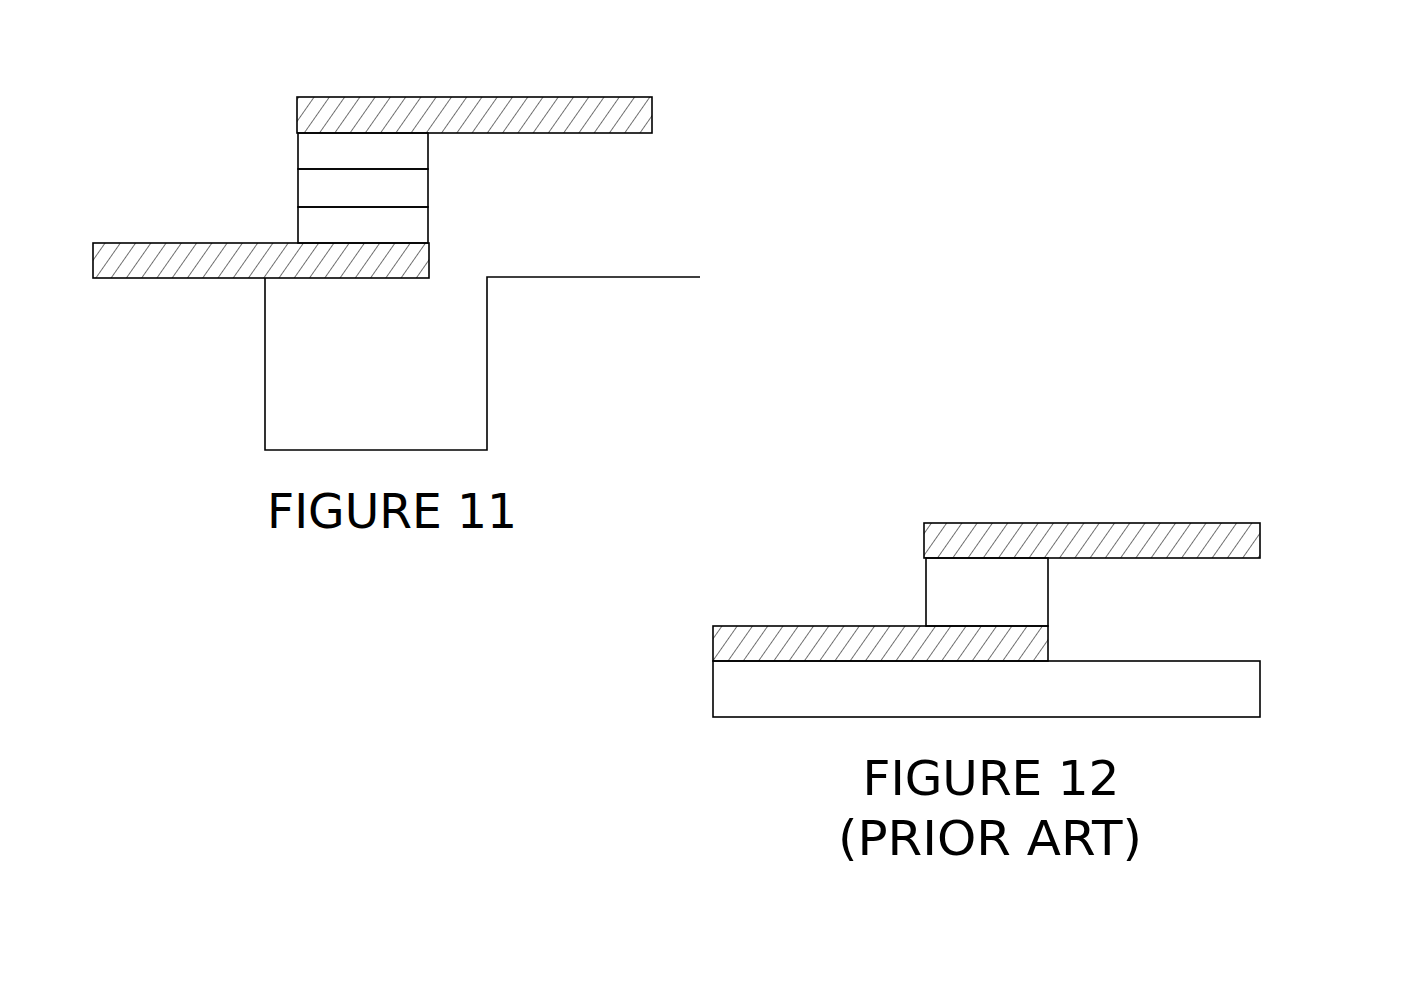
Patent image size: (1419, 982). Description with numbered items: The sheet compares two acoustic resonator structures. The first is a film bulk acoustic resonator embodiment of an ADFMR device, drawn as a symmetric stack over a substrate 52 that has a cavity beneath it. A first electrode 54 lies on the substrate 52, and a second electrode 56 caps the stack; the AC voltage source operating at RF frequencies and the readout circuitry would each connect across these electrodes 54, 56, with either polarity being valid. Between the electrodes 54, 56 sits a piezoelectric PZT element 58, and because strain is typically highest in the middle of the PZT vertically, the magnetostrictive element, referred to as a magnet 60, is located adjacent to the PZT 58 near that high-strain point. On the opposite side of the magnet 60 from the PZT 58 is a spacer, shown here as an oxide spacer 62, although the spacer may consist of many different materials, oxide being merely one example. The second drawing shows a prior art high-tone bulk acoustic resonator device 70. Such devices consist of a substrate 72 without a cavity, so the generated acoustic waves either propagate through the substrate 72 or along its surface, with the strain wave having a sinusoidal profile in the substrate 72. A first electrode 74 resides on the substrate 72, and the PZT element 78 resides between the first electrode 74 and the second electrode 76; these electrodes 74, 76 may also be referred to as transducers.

In FIG. 11, the substrate 52 is at (488, 403).
In FIG. 11, the first electrode 54 is at (128, 243).
In FIG. 11, the second electrode 56 is at (652, 118).
In FIG. 11, the piezoelectric element 58 is at (429, 232).
In FIG. 11, the magnet 60 is at (297, 187).
In FIG. 11, the oxide spacer 62 is at (430, 152).
In FIG. 12, the prior art HBAR device 70 is at (1255, 452).
In FIG. 12, the substrate 72 is at (1262, 687).
In FIG. 12, the first electrode 74 is at (718, 624).
In FIG. 12, the second electrode 76 is at (1262, 547).
In FIG. 12, the PZT element 78 is at (1048, 595).